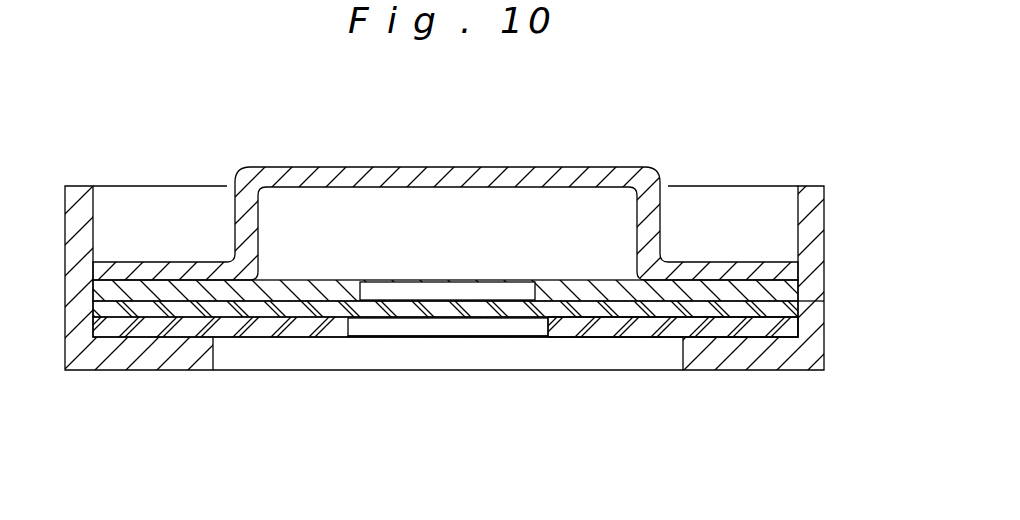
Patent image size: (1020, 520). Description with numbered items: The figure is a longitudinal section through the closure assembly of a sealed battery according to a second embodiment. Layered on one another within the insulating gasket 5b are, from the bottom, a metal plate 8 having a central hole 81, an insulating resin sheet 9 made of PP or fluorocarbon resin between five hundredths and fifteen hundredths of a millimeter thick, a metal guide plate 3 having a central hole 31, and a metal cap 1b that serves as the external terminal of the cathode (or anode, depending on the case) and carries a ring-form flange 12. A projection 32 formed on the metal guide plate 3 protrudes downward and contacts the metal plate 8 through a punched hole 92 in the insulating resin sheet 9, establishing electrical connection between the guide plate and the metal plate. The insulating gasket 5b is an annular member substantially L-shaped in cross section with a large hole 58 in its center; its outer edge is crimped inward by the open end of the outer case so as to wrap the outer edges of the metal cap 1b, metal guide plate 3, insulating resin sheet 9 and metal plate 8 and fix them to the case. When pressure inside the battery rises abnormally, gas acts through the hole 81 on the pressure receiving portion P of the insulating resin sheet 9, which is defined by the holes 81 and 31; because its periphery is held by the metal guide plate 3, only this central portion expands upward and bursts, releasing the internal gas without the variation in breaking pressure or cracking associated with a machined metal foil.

The metal cap 1b is at (655, 215).
The ring-form flange 12 is at (167, 268).
The metal guide plate 3 is at (786, 282).
The hole 31 is at (450, 288).
The insulating resin sheet 9 is at (782, 307).
The metal plate 8 is at (770, 323).
The projection 32 is at (680, 305).
The punched hole 92 is at (716, 318).
The hole 81 is at (493, 330).
The insulating gasket 5b is at (757, 360).
The large hole 58 is at (385, 362).
The pressure receiving portion P is at (447, 321).